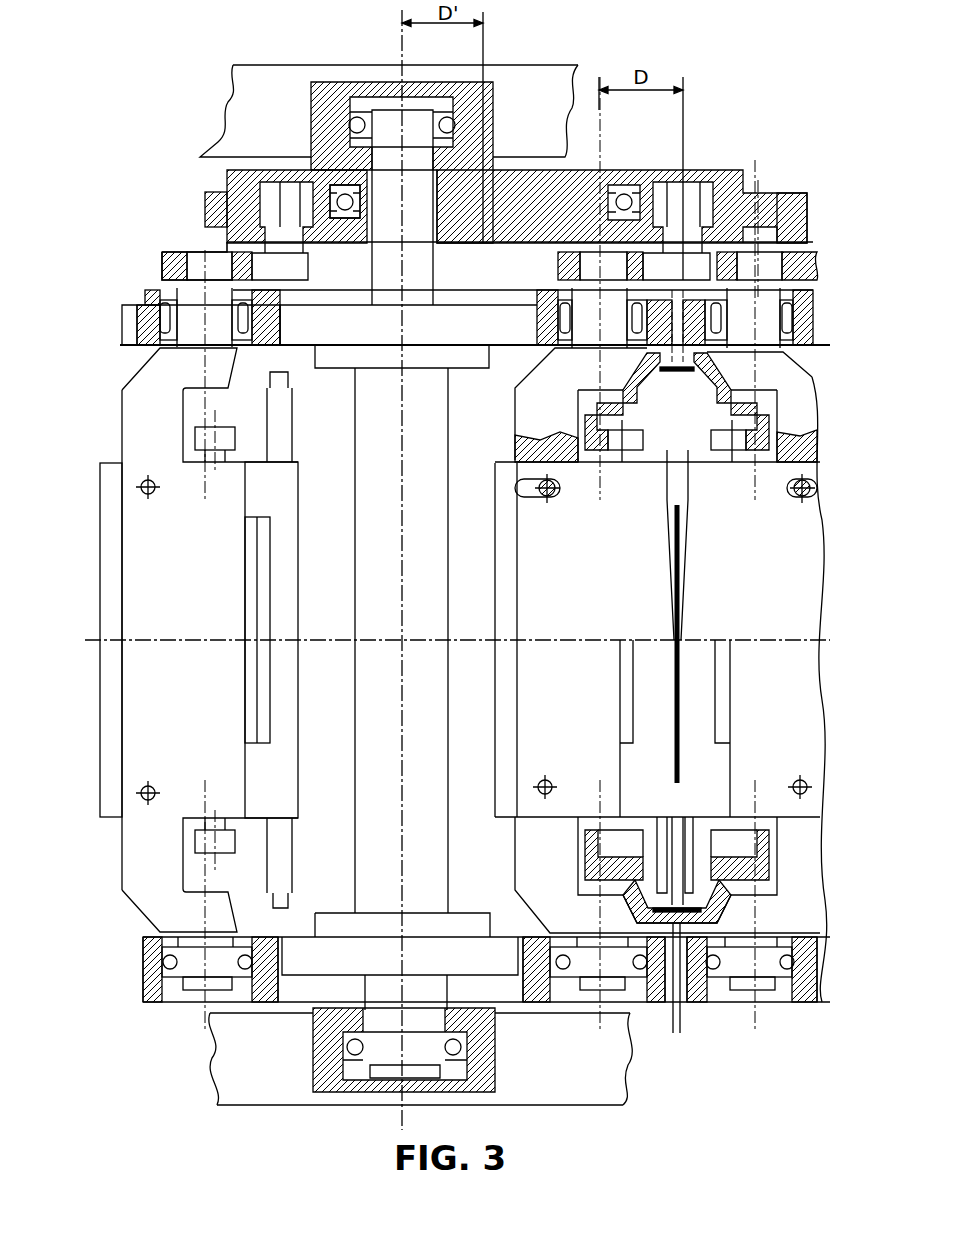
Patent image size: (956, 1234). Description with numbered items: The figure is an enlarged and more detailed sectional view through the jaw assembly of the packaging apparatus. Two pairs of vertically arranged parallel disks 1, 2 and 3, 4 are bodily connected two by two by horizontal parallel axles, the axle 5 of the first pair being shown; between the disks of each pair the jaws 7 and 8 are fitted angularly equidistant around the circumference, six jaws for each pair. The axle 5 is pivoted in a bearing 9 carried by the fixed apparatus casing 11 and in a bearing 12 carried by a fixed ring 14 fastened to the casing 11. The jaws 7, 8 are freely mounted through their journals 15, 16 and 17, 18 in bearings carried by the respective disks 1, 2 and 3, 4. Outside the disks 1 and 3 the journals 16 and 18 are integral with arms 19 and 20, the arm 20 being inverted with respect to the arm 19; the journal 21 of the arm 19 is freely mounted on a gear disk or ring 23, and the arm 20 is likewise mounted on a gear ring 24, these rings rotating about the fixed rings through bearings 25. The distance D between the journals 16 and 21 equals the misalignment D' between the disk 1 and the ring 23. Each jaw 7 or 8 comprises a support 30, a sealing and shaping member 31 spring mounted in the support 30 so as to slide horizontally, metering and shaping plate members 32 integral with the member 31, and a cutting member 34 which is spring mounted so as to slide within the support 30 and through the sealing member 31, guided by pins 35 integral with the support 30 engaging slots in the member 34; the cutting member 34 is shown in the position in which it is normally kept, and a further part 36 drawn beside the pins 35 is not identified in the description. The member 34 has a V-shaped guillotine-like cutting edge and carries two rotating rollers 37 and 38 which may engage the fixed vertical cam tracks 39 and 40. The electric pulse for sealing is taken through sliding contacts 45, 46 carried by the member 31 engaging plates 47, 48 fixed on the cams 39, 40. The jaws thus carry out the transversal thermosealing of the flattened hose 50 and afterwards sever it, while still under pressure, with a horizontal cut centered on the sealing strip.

The disk 1 is at (312, 338).
The disk 2 is at (287, 992).
The disk 3 is at (805, 330).
The disk 4 is at (697, 1001).
The horizontal parallel axle 5 is at (364, 670).
The jaw 7 is at (96, 624).
The jaw 8 is at (689, 460).
The bearing 9 is at (368, 1057).
The fixed apparatus casing 11 is at (270, 75).
The bearing 12 is at (358, 114).
The fixed ring 14 is at (517, 180).
The journal 15 is at (190, 968).
The journal 16 is at (190, 287).
The journal 17 is at (757, 968).
The journal 18 is at (807, 262).
The arm 19 is at (487, 266).
The arm 20 is at (788, 278).
The journal 21 is at (277, 205).
The gear disk or ring 23 is at (225, 200).
The gear disk or ring 24 is at (778, 195).
The bearing 25 is at (628, 150).
The support 30 is at (155, 525).
The sealing and shaping member 31 is at (283, 548).
The metering and shaping plate member 32 is at (263, 592).
The cutting member 34 is at (540, 583).
The pin 35 is at (552, 505).
The elongated hole 36 is at (528, 497).
The rotating roller 37 is at (637, 452).
The rotating roller 38 is at (608, 850).
The fixed vertical cam track 39 is at (632, 390).
The fixed vertical cam track 40 is at (650, 878).
The sliding contact 45 is at (276, 378).
The sliding contact 46 is at (284, 898).
The plate 47 is at (684, 376).
The plate 48 is at (676, 1033).
The flattened hose 50 is at (681, 560).